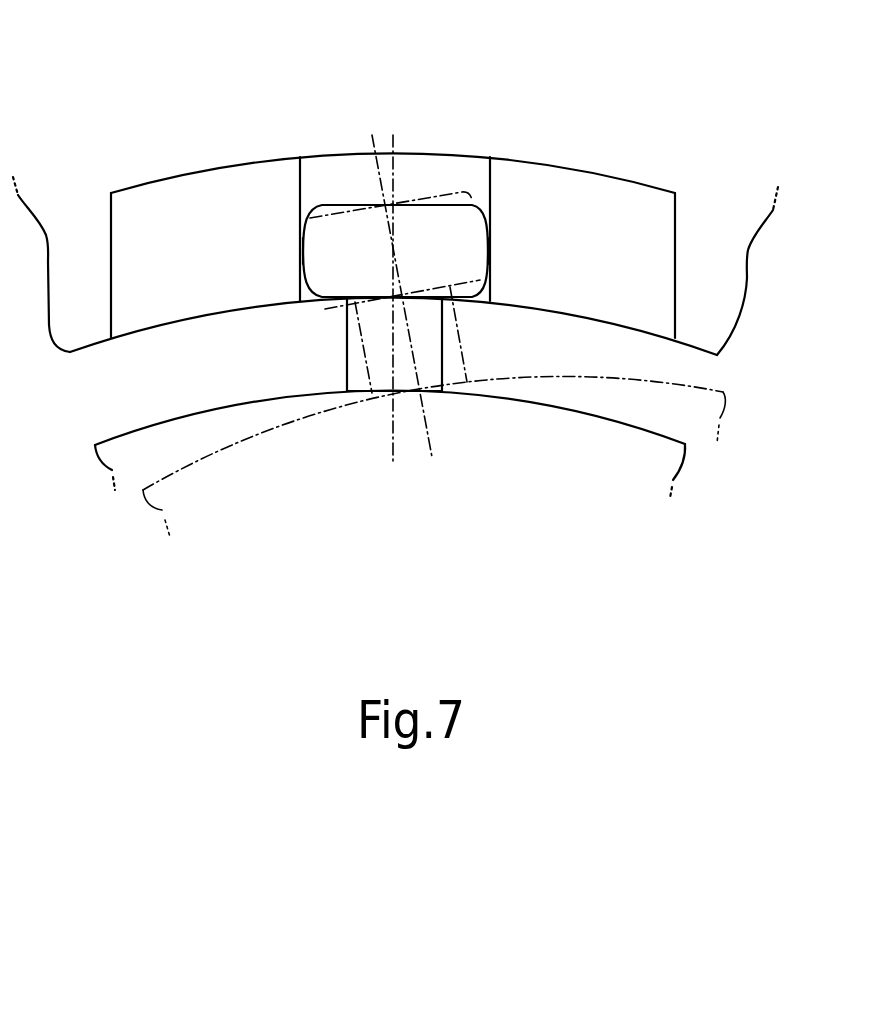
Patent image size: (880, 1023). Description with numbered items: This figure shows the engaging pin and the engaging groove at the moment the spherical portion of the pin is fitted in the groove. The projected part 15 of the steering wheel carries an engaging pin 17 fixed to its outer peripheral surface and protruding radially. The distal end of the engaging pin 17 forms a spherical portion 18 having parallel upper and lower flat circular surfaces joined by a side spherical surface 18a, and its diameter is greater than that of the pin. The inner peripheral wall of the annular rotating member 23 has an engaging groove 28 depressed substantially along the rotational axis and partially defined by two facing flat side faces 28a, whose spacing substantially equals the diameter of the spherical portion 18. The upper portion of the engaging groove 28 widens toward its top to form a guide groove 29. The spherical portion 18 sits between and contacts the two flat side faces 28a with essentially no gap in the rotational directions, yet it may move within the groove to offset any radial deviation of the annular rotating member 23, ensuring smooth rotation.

The projected part 15 is at (168, 442).
The engaging pin 17 is at (345, 363).
The spherical portion 18 is at (358, 188).
The side spherical surface 18a is at (305, 207).
The annular rotating member 23 is at (722, 292).
The engaging groove 28 is at (432, 148).
The flat side faces 28a is at (306, 178).
The guide groove 29 is at (181, 193).